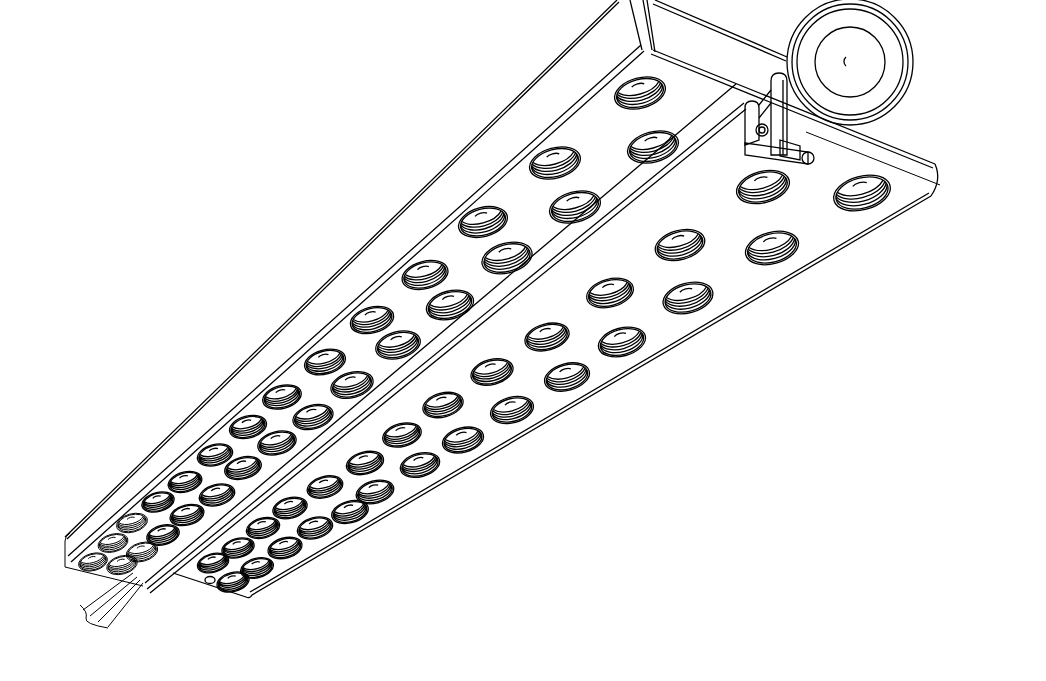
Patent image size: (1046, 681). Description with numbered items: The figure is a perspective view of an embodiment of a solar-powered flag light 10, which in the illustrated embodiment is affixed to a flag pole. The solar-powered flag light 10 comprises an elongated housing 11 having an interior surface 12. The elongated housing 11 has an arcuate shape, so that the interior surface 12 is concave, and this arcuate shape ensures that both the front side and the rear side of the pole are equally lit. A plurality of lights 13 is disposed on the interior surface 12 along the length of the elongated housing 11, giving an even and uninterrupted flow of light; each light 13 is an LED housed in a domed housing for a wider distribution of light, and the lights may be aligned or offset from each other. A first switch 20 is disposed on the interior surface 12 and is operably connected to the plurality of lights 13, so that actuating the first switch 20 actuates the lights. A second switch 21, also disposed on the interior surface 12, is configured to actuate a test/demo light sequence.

The solar-powered flag light 10 is at (230, 148).
The elongated housing 11 is at (549, 69).
The interior surface 12 is at (817, 258).
The plurality of lights 13 is at (871, 206).
The first switch 20 is at (132, 580).
The second switch 21 is at (210, 585).